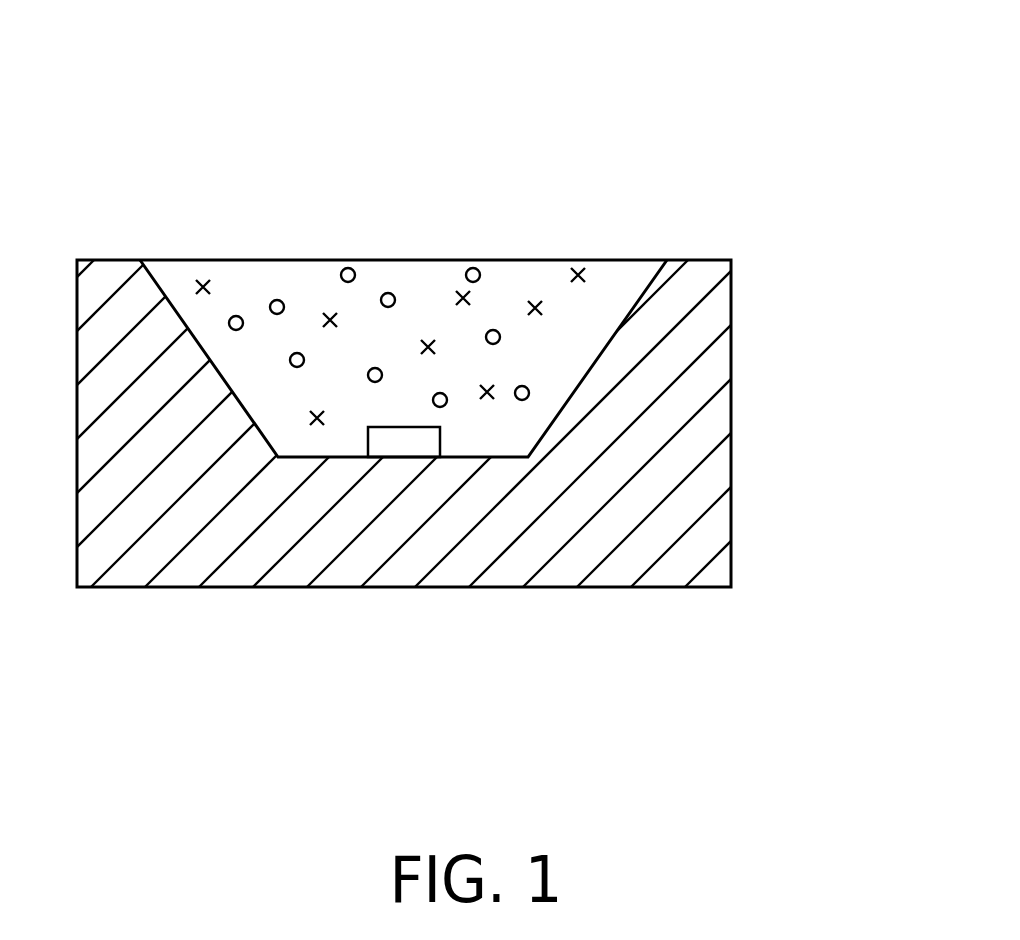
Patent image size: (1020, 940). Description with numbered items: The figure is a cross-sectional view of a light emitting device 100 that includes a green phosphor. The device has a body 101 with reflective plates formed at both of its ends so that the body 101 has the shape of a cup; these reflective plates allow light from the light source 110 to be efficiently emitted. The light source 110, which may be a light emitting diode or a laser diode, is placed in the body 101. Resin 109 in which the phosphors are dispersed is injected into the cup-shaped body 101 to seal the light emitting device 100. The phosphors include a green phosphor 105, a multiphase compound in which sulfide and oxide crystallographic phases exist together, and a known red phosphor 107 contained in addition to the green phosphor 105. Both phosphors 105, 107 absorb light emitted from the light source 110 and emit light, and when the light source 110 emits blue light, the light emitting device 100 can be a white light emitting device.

The light emitting device 100 is at (357, 72).
The body 101 is at (670, 528).
The green phosphor 105 is at (542, 306).
The red phosphor 107 is at (351, 268).
The resin 109 is at (528, 276).
The light source 110 is at (393, 448).